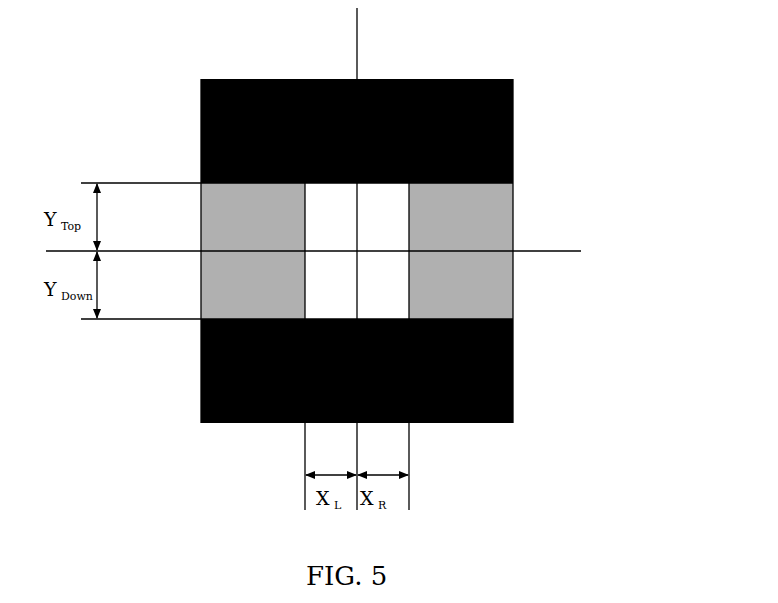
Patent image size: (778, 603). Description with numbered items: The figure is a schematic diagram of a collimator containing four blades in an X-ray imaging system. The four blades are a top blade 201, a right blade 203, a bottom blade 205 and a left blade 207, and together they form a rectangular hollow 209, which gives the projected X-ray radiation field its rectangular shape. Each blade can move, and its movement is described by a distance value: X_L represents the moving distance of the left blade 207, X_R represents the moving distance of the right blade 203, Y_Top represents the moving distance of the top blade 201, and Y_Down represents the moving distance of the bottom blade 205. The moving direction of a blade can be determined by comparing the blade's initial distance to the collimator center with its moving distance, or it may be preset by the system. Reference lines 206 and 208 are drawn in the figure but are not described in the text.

The top blade 201 is at (193, 72).
The right blade 203 is at (483, 197).
The bottom blade 205 is at (505, 360).
The center line 206 is at (349, 25).
The left blade 207 is at (193, 265).
The horizontal reference line 208 is at (365, 243).
The rectangular hollow 209 is at (367, 275).